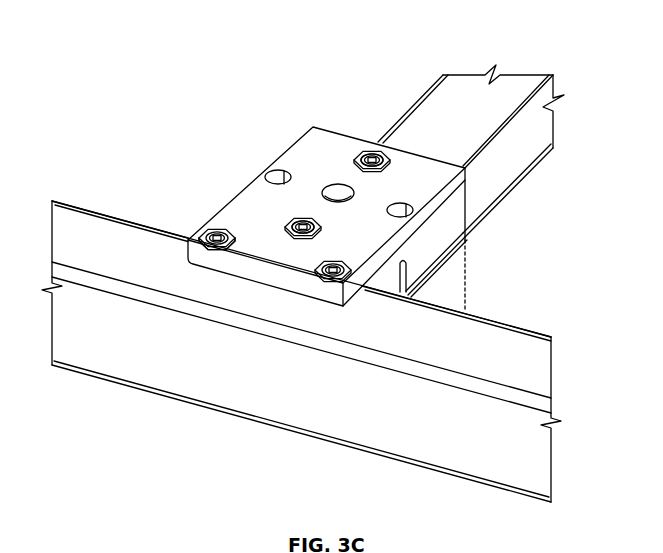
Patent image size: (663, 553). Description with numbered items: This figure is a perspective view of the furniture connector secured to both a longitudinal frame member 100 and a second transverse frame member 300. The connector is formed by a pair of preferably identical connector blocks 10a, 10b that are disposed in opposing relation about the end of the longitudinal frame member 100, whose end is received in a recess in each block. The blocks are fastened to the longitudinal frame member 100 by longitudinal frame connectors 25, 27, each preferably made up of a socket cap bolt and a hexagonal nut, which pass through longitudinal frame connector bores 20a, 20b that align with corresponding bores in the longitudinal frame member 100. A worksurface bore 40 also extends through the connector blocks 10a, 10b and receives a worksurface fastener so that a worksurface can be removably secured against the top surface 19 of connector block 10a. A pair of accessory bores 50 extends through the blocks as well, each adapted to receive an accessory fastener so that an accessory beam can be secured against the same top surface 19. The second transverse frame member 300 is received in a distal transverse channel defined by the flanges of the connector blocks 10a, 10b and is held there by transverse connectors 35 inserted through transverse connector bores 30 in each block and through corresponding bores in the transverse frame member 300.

The top surface 19 is at (322, 131).
The longitudinal frame connector 25 is at (372, 152).
The longitudinal frame connector 27 is at (301, 216).
The transverse connector 35 is at (211, 232).
The transverse connector bore 30 is at (232, 230).
The worksurface bore 40 is at (337, 184).
The accessory bore 50 is at (271, 172).
The longitudinal frame connector bore 20a is at (388, 160).
The longitudinal frame connector bore 20b is at (320, 227).
The connector block 10a is at (449, 203).
The connector block 10b is at (453, 280).
The longitudinal frame member 100 is at (525, 148).
The second transverse frame member 300 is at (512, 340).